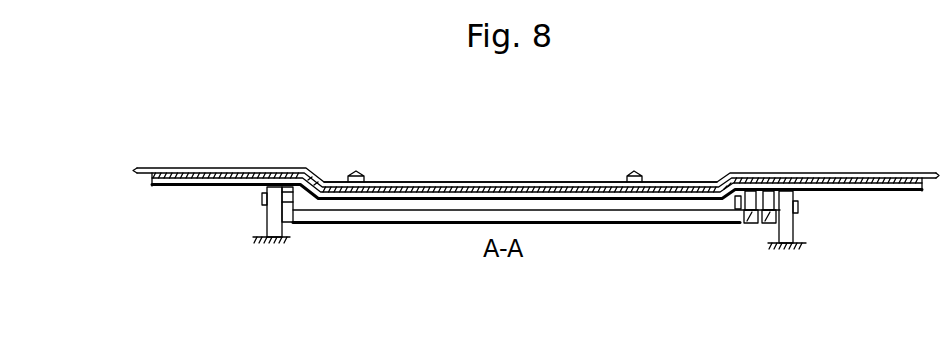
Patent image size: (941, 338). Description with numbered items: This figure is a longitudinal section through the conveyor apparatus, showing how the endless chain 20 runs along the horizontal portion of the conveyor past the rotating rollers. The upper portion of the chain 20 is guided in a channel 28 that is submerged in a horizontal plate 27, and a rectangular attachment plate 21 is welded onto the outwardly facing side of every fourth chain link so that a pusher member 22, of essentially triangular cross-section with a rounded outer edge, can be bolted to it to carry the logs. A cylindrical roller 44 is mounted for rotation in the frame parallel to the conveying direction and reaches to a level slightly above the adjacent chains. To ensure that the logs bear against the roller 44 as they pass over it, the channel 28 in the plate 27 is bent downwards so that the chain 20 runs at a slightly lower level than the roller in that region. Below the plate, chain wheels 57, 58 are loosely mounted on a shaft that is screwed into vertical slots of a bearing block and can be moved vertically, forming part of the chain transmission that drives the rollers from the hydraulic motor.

The endless chain 20 is at (270, 168).
The attachment plate 21 is at (364, 181).
The pusher member 22 is at (357, 171).
The horizontal plate 27 is at (197, 172).
The channel 28 is at (229, 186).
The cylindrical roller 44 is at (484, 203).
The chain wheel 57 is at (748, 224).
The chain wheel 58 is at (769, 224).